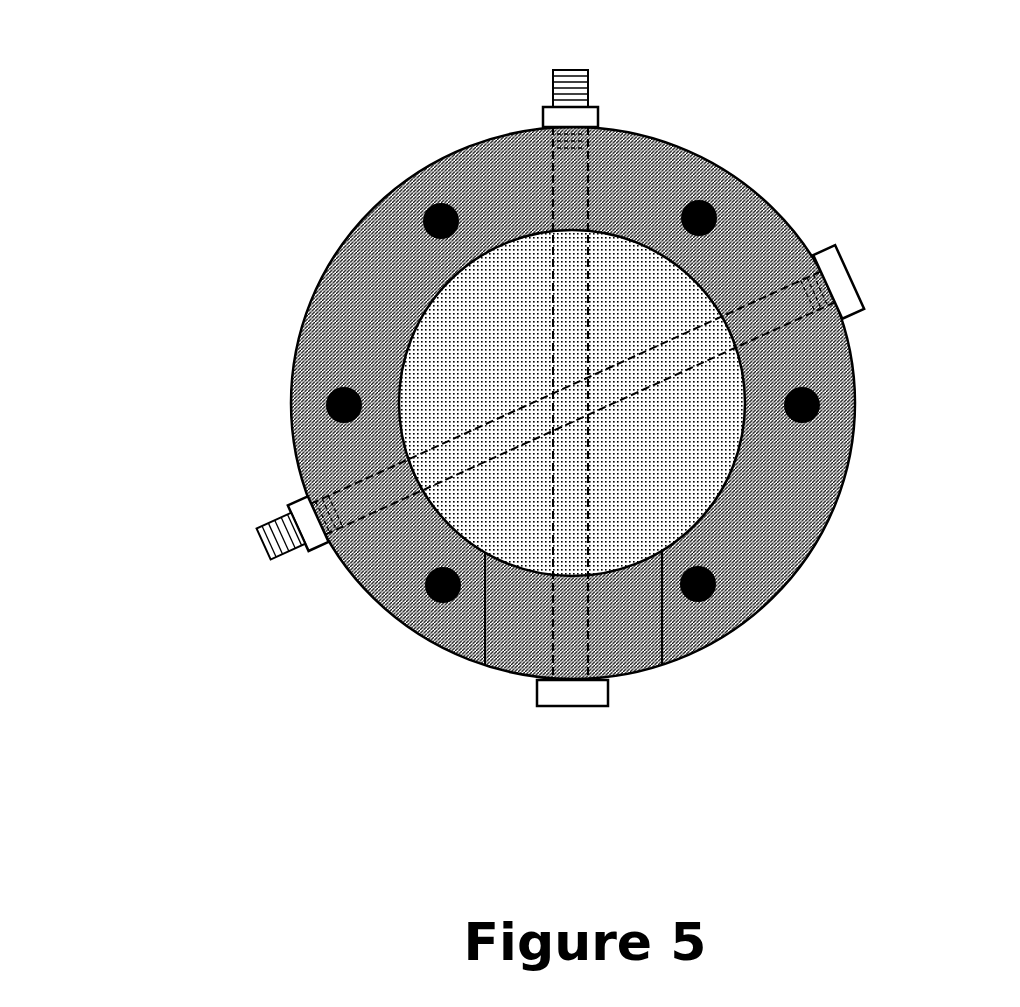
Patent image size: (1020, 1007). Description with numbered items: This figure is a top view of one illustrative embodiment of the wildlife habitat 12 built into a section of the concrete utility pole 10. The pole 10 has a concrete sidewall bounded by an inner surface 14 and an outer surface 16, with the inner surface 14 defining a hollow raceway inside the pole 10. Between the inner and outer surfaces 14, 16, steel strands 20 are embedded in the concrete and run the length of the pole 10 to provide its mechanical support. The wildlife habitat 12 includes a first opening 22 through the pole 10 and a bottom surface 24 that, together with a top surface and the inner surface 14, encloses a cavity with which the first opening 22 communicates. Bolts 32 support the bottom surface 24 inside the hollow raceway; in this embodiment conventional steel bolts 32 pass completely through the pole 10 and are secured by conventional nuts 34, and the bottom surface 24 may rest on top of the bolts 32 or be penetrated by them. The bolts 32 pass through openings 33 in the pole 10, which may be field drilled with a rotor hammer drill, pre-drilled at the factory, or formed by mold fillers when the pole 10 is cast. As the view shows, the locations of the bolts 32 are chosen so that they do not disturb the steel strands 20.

The pole 10 is at (167, 169).
The wildlife habitat 12 is at (681, 460).
The inner surface 14 is at (422, 312).
The outer surface 16 is at (307, 302).
The steel strands 20 is at (441, 204).
The first opening 22 is at (627, 682).
The bottom surface 24 is at (632, 267).
The bolts 32 is at (830, 247).
The openings 33 is at (597, 160).
The nuts 34 is at (292, 503).